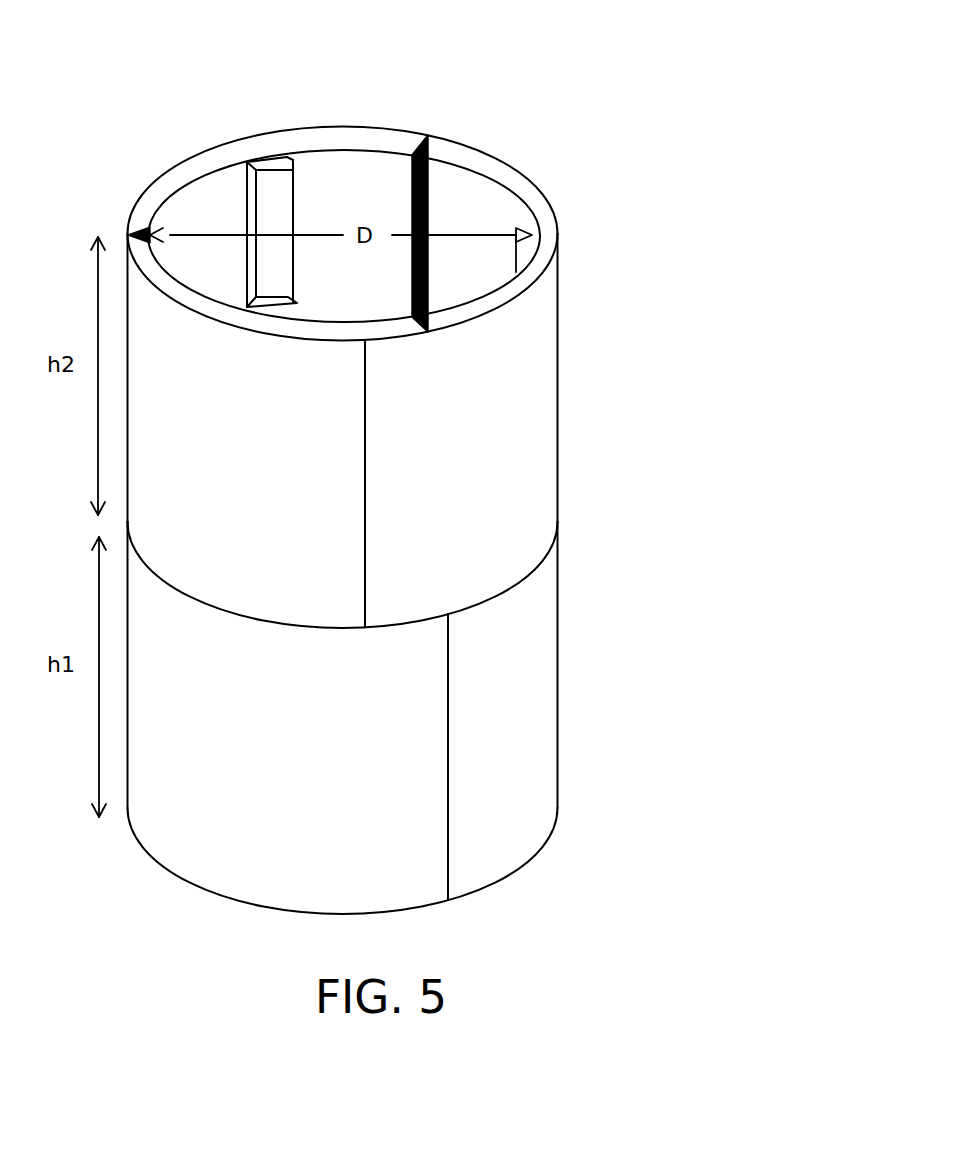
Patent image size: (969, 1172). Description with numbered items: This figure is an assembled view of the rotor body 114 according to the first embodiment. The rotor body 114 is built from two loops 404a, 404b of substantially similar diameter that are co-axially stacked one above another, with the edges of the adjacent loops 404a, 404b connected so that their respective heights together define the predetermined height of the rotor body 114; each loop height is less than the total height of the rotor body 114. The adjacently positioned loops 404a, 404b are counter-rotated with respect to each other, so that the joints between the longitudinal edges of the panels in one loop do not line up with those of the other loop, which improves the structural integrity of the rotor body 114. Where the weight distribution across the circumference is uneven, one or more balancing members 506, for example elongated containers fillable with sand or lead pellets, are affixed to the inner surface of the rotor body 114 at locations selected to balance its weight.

The rotor body 114 is at (410, 467).
The loop 404a is at (535, 731).
The loop 404b is at (533, 412).
The balancing member 506 is at (270, 180).